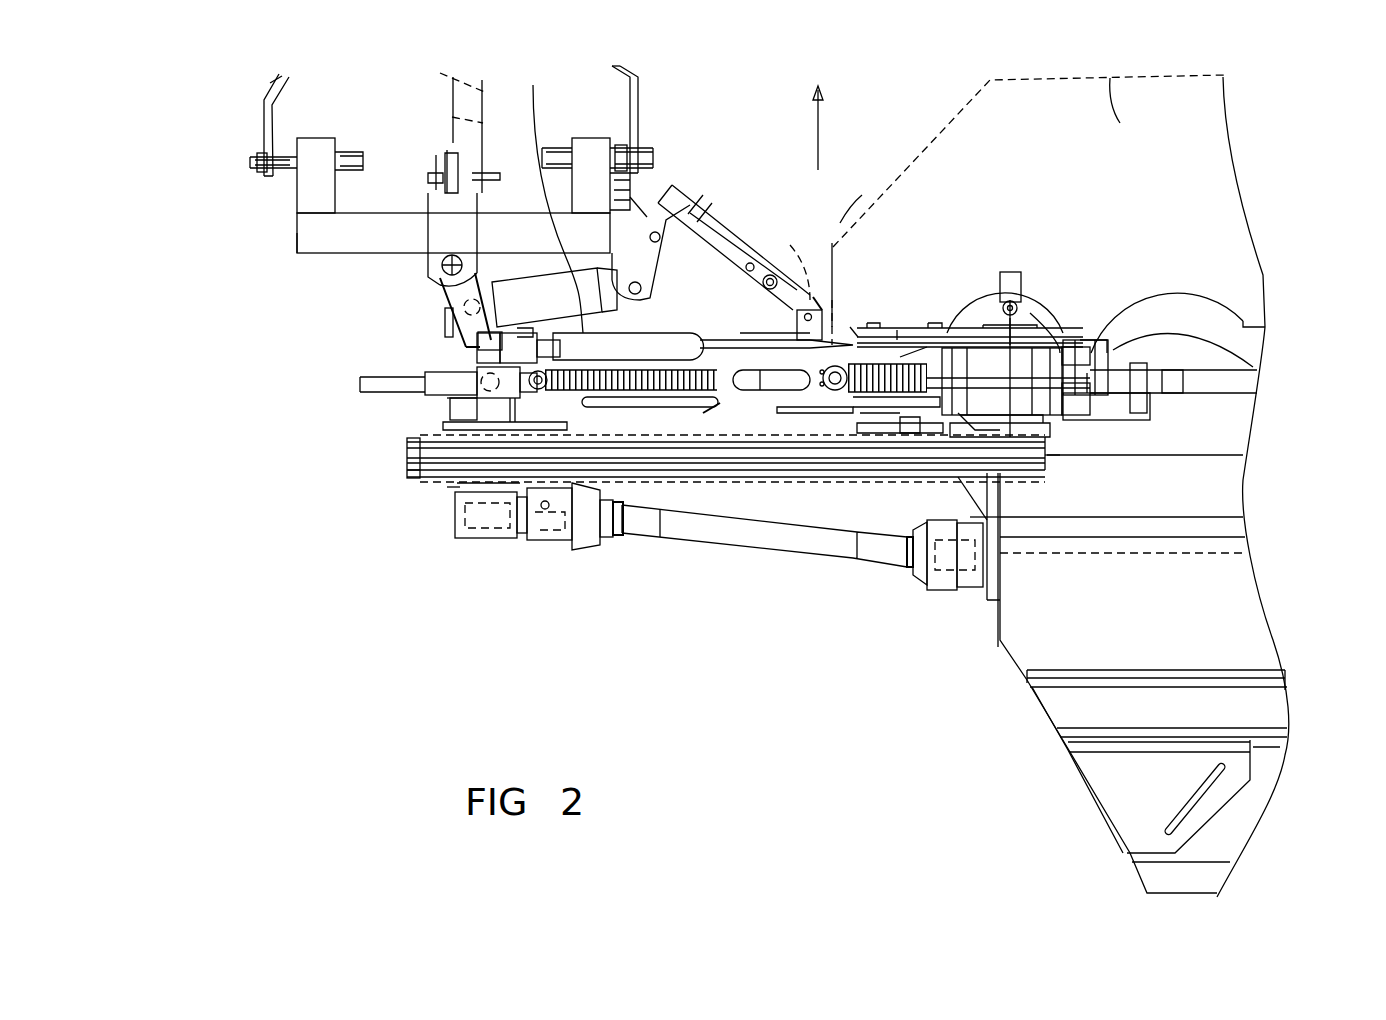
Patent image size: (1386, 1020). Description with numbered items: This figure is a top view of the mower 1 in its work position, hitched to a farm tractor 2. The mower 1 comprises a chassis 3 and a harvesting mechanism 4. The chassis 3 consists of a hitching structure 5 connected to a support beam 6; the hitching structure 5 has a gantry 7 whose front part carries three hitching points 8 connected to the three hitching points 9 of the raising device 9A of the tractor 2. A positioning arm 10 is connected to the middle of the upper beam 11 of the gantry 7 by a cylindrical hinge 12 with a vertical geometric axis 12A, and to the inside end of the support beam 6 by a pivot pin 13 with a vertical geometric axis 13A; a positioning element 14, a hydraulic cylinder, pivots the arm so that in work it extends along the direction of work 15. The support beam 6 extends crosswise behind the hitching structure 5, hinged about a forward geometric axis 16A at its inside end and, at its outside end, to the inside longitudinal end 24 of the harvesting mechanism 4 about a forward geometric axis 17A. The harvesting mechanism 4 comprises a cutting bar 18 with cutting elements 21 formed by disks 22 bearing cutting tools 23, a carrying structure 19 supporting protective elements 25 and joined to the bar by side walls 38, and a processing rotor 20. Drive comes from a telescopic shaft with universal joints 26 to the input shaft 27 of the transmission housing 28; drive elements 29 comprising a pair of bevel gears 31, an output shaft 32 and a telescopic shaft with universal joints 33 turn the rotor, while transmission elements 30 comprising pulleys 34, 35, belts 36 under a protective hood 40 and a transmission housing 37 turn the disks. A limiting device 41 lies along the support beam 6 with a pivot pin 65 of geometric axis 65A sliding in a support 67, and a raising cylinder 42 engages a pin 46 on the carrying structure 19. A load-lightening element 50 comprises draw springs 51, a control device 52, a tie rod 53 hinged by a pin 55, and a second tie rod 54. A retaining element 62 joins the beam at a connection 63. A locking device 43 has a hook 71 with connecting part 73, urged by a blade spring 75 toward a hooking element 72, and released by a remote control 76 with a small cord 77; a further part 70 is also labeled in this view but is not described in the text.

The mower 1 is at (1230, 175).
The farm tractor 2 is at (272, 84).
The chassis 3 is at (297, 212).
The harvesting mechanism 4 is at (1257, 573).
The hitching structure 5 is at (297, 198).
The support beam 6 is at (700, 470).
The gantry 7 is at (297, 222).
The hitching points 8 is at (250, 165).
The hitching points of raising device 9 is at (262, 168).
The raising device 9A is at (625, 70).
The positioning arm 10 is at (487, 262).
The upper beam 11 is at (297, 243).
The cylindrical hinge 12 is at (433, 257).
The geometric axis 12A is at (438, 277).
The pivot pin 13 is at (453, 393).
The geometric axis 13A is at (490, 383).
The positioning element 14 is at (558, 310).
The direction of work 15 is at (818, 103).
The geometric axis 16A is at (457, 417).
The geometric axis 17A is at (963, 327).
The cutting bar 18 is at (1233, 320).
The carrying structure 19 is at (1247, 380).
The processing rotor 20 is at (1027, 557).
The cutting elements 21 is at (1030, 313).
The disks 22 is at (987, 300).
The cutting tools 23 is at (1010, 280).
The inside longitudinal end 24 is at (970, 517).
The protective elements 25 is at (1128, 116).
The telescopic shaft with universal joints 26 is at (452, 108).
The input shaft 27 is at (457, 483).
The transmission housing 28 is at (510, 540).
The drive elements 29 is at (777, 540).
The transmission elements 30 is at (888, 535).
The pair of bevel gears 31 is at (473, 500).
The output shaft 32 is at (533, 533).
The telescopic shaft with universal joints 33 is at (675, 537).
The pulley 34 is at (445, 487).
The pulley 35 is at (1040, 473).
The belts 36 is at (838, 480).
The transmission housing 37 is at (1070, 333).
The side walls 38 is at (995, 590).
The protective hood 40 is at (407, 472).
The limiting device 41 is at (680, 413).
The raising cylinder 42 is at (653, 337).
The locking device 43 is at (829, 310).
The pin 46 is at (1100, 327).
The load-lightening element 50 is at (653, 380).
The draw springs 51 is at (898, 327).
The control device 52 is at (453, 390).
The tie rod 53 is at (1087, 375).
The second tie rod 54 is at (360, 388).
The pin 55 is at (1133, 410).
The retaining element 62 is at (708, 222).
The connection 63 is at (785, 261).
The pivot pin 65 is at (790, 348).
The geometric axis 65A is at (762, 385).
The support 67 is at (737, 348).
The gusset 70 is at (970, 420).
The hook 71 is at (908, 417).
The hooking element 72 is at (1153, 407).
The connecting part 73 is at (827, 337).
The blade spring 75 is at (762, 392).
The remote control 76 is at (533, 90).
The small cord 77 is at (560, 265).